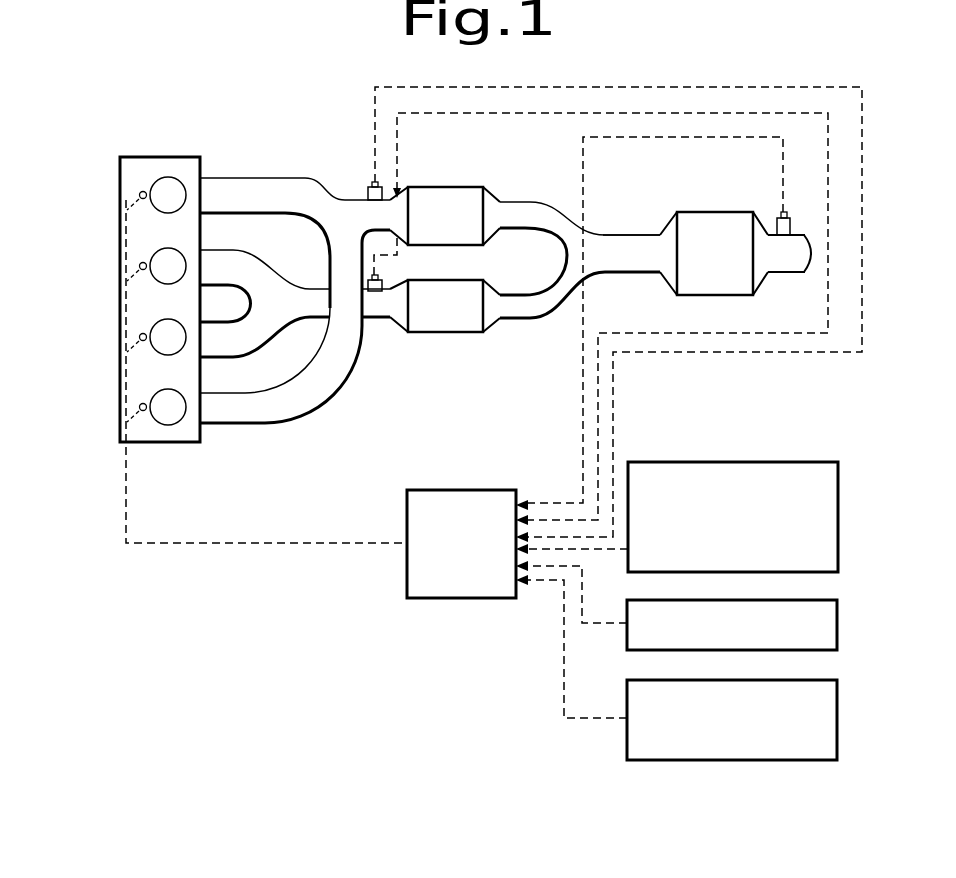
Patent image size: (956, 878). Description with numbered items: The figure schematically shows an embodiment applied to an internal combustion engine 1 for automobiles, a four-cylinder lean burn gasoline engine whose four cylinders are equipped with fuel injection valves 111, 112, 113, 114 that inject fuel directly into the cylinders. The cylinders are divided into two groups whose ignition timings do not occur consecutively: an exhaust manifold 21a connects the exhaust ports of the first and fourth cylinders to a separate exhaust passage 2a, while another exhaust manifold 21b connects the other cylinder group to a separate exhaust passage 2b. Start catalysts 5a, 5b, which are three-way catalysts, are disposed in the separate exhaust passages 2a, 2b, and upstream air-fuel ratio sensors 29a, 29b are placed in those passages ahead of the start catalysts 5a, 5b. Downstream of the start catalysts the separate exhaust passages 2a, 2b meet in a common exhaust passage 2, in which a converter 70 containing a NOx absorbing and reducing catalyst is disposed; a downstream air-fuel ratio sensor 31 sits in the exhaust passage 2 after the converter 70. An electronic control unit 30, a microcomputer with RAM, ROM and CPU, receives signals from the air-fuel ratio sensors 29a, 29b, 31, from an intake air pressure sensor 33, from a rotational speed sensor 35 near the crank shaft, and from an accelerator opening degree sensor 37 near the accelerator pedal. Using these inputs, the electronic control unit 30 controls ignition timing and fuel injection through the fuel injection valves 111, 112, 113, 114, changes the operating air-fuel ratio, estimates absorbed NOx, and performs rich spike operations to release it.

The internal combustion engine 1 is at (183, 128).
The fuel injection valve 111 is at (139, 193).
The fuel injection valve 112 is at (139, 264).
The fuel injection valve 113 is at (139, 335).
The fuel injection valve 114 is at (139, 405).
The exhaust manifold 21a is at (280, 184).
The exhaust manifold 21b is at (267, 270).
The upstream air-fuel ratio sensor 29a is at (370, 186).
The upstream air-fuel ratio sensor 29b is at (388, 282).
The start catalyst 5a is at (447, 188).
The start catalyst 5b is at (447, 333).
The separate exhaust passage 2a is at (522, 203).
The separate exhaust passage 2b is at (527, 319).
The common exhaust passage 2 is at (620, 268).
The converter 70 is at (722, 212).
The downstream air-fuel ratio sensor 31 is at (793, 217).
The electronic control unit 30 is at (455, 600).
The intake air pressure sensor 33 is at (760, 462).
The rotational speed sensor 35 is at (627, 614).
The accelerator opening degree sensor 37 is at (738, 760).